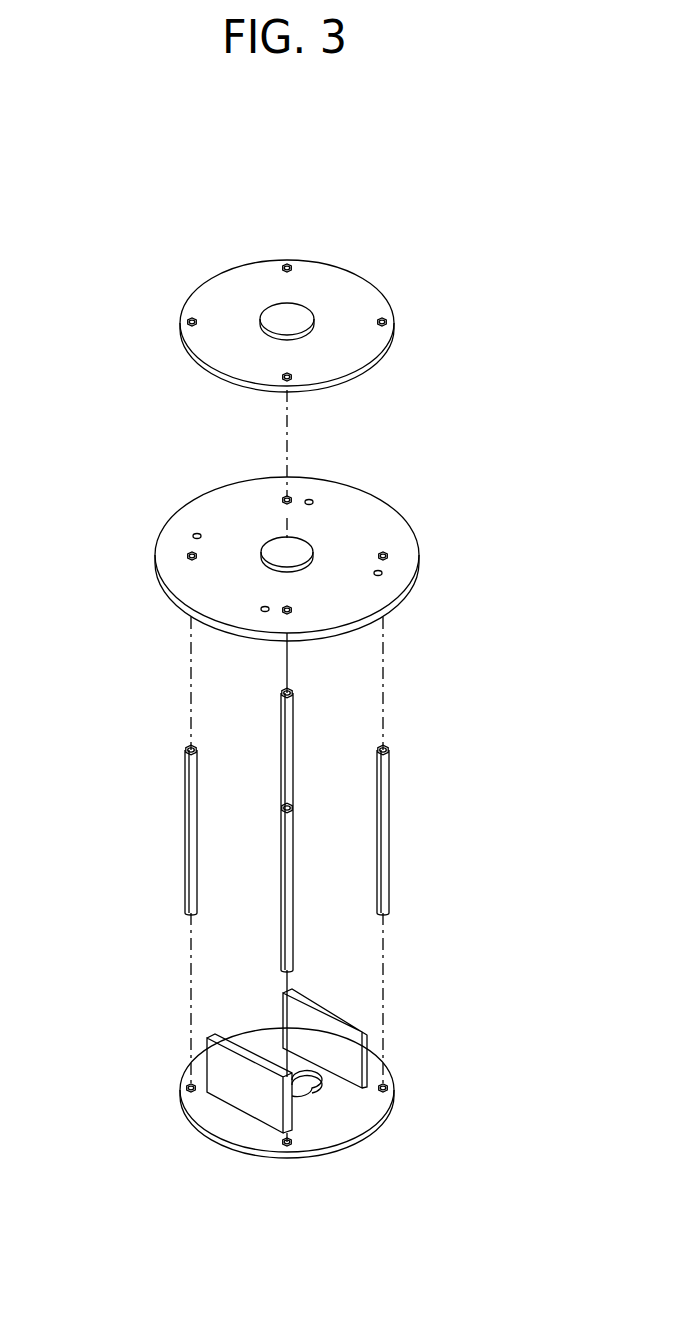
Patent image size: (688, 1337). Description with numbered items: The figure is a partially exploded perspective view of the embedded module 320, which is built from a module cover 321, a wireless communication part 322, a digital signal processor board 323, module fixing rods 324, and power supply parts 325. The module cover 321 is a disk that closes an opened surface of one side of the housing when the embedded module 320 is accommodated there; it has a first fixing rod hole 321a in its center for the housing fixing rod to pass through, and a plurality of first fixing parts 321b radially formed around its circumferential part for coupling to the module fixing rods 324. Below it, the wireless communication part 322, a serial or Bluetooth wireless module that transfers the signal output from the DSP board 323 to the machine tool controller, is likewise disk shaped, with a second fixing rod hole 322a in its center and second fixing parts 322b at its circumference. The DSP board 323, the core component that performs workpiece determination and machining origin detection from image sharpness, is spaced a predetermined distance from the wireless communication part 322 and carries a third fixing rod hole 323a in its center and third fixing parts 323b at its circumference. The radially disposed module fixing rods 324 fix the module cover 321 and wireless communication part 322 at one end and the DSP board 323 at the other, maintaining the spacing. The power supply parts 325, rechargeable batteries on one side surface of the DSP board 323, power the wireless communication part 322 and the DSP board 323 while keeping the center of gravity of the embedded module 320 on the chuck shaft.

The embedded module 320 is at (281, 677).
The module cover 321 is at (358, 273).
The first fixing rod hole 321a is at (281, 318).
The first fixing parts 321b is at (188, 320).
The wireless communication part 322 is at (418, 533).
The second fixing rod hole 322a is at (291, 554).
The second fixing parts 322b is at (187, 555).
The digital signal processor (DSP) board 323 is at (388, 1114).
The third fixing rod hole 323a is at (304, 1097).
The third fixing parts 323b is at (287, 1148).
The module fixing rods 324 is at (388, 787).
The power supply parts 325 is at (330, 1012).